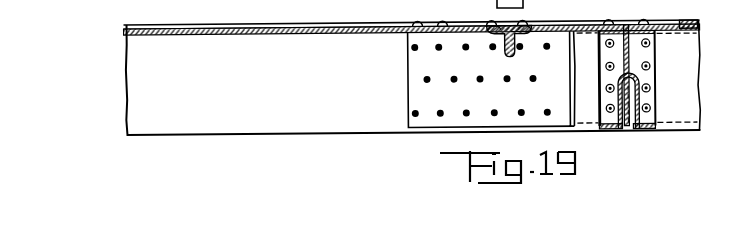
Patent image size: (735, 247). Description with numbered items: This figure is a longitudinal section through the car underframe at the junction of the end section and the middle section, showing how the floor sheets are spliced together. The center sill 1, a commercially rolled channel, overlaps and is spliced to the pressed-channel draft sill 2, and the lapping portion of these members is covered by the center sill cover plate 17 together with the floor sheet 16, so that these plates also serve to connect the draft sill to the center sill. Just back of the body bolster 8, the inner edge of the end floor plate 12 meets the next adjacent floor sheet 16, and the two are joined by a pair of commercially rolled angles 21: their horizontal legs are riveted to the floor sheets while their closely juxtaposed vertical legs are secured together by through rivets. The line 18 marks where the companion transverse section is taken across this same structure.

The center sill 1 is at (127, 95).
The draft sill 2 is at (440, 119).
The body bolster 8 is at (655, 69).
The floor plate 12 is at (697, 22).
The floor sheet 16 is at (219, 31).
The center sill cover plate 17 is at (318, 31).
The section line 18 is at (651, 24).
The angle 21 is at (505, 57).